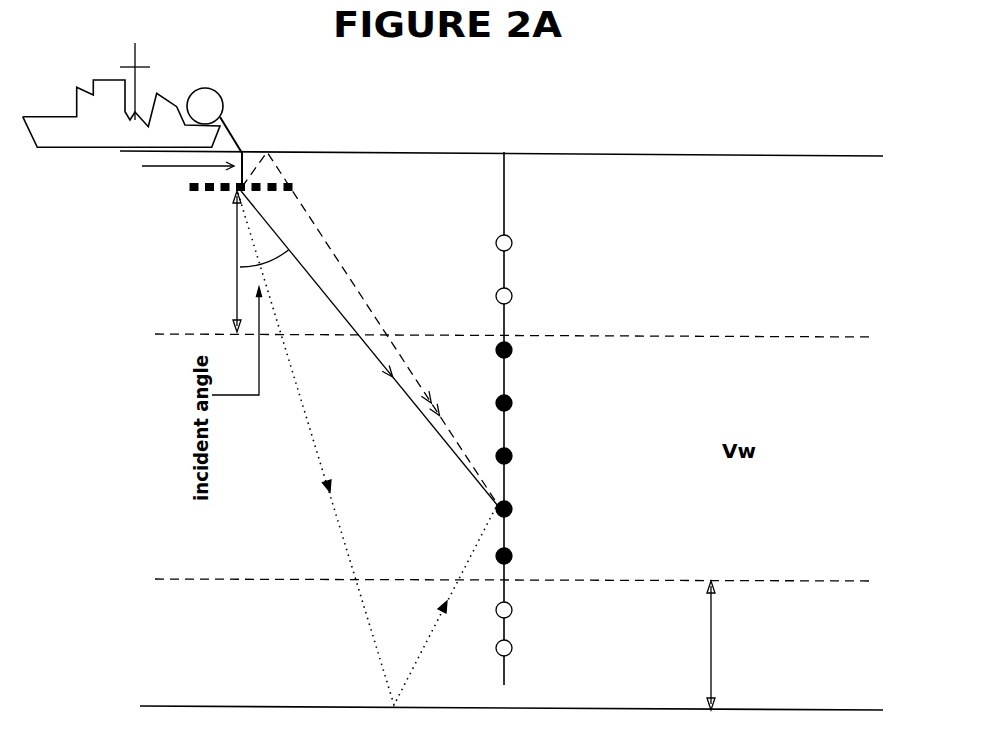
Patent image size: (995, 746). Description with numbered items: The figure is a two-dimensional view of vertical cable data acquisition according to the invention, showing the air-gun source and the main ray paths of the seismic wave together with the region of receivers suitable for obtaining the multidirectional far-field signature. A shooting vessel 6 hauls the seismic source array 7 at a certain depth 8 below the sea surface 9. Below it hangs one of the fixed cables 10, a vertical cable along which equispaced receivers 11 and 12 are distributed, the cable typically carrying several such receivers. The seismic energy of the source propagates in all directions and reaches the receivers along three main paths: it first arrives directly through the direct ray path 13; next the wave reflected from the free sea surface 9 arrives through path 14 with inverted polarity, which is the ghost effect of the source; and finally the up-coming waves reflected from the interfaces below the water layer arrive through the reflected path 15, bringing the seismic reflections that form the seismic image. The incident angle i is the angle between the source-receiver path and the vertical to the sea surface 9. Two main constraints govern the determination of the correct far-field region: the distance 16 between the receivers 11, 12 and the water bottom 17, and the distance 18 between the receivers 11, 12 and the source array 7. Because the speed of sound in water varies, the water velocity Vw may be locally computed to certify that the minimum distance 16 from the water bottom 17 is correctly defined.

The shooting vessel 6 is at (132, 113).
The seismic source array 7 is at (302, 182).
The depth 8 is at (175, 171).
The sea surface 9 is at (501, 139).
The fixed cable 10 is at (512, 400).
The receivers 11 is at (528, 243).
The receivers 12 is at (518, 548).
The direct ray path 13 is at (369, 348).
The free-surface reflected ray path 14 is at (371, 330).
The reflected ray path 15 is at (367, 449).
The distance to water bottom 16 is at (732, 645).
The water bottom 17 is at (511, 695).
The distance to source array 18 is at (203, 261).